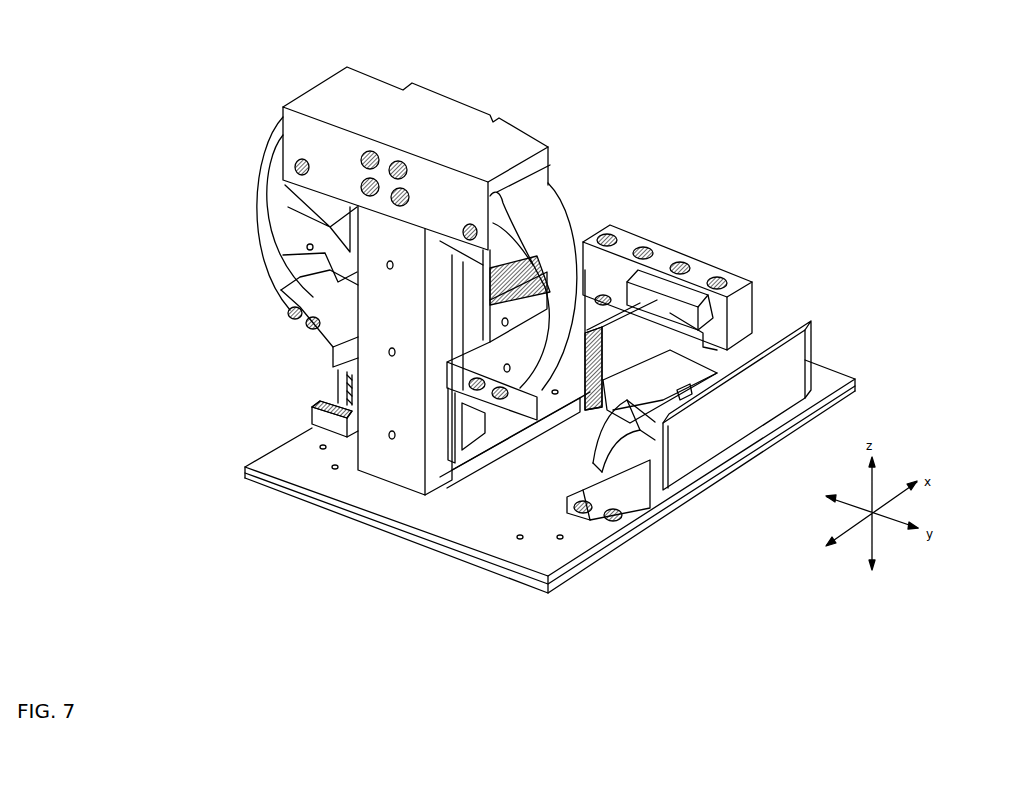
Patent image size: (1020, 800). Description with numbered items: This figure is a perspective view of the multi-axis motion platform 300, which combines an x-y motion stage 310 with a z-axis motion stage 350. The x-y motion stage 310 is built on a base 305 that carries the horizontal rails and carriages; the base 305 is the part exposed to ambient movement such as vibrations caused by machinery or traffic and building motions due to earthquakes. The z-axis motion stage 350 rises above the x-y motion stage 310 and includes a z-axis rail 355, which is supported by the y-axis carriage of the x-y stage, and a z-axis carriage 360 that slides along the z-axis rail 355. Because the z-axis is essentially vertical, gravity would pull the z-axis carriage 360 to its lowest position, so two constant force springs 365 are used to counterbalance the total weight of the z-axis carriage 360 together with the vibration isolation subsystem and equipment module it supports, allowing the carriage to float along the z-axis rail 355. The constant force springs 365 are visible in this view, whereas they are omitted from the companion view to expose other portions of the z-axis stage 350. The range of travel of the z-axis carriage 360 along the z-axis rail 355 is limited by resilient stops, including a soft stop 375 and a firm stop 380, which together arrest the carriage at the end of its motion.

The multi-axis motion platform 300 is at (181, 39).
The base 305 is at (340, 514).
The x-y motion stage 310 is at (828, 308).
The z-axis motion stage 350 is at (170, 158).
The z-axis rail 355 is at (332, 389).
The z-axis carriage 360 is at (318, 344).
The constant force springs 365 is at (256, 232).
The soft stop 375 is at (312, 270).
The firm stop 380 is at (473, 417).